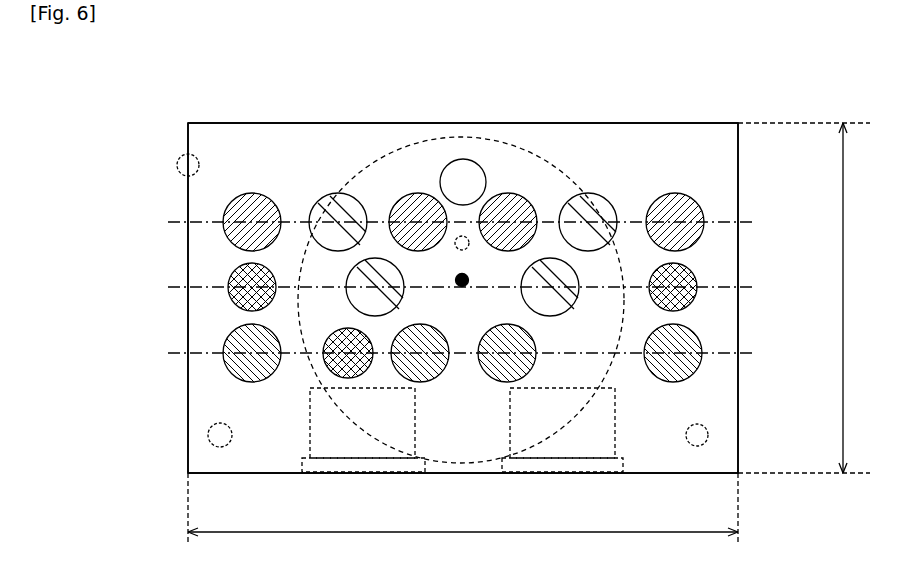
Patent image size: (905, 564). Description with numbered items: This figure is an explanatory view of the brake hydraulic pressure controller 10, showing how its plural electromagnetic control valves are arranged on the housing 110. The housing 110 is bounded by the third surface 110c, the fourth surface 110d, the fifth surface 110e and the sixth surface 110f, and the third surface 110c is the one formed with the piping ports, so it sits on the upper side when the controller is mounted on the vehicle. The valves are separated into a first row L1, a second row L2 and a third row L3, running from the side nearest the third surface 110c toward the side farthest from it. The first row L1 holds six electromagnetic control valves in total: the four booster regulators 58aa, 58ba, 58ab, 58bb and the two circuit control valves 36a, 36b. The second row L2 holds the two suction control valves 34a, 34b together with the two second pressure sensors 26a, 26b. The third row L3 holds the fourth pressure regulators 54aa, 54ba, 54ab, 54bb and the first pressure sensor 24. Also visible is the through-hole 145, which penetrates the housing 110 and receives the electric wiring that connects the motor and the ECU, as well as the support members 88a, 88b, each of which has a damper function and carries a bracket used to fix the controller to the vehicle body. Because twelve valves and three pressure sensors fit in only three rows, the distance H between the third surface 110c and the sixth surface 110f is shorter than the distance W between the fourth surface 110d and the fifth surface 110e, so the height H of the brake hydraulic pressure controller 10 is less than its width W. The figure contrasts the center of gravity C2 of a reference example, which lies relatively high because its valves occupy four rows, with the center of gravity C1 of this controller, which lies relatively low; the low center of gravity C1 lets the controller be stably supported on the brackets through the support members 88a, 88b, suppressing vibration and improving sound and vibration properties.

The brake hydraulic pressure controller 10 is at (747, 116).
The housing 110 is at (740, 419).
The third surface 110c is at (650, 123).
The fourth surface 110d is at (740, 158).
The fifth surface 110e is at (188, 440).
The sixth surface 110f is at (650, 473).
The height H is at (804, 298).
The width W is at (463, 517).
The first row L1 is at (475, 222).
The second row L2 is at (475, 287).
The third row L3 is at (475, 353).
The booster regulator 58aa is at (226, 205).
The circuit control valve 36a is at (328, 207).
The booster regulator 58ba is at (415, 203).
The booster regulator 58bb is at (508, 203).
The circuit control valve 36b is at (590, 200).
The booster regulator 58ab is at (697, 203).
The through-hole 145 is at (465, 177).
The center of gravity C1 is at (462, 289).
The center of gravity C2 is at (470, 249).
The second pressure sensor 26a is at (230, 276).
The suction control valve 34a is at (362, 300).
The suction control valve 34b is at (560, 300).
The second pressure sensor 26b is at (694, 272).
The fourth pressure regulator 54aa is at (226, 341).
The first pressure sensor 24 is at (350, 363).
The fourth pressure regulator 54ba is at (405, 375).
The fourth pressure regulator 54bb is at (513, 373).
The fourth pressure regulator 54ab is at (694, 338).
The support member 88b is at (180, 158).
The support member 88a is at (708, 437).